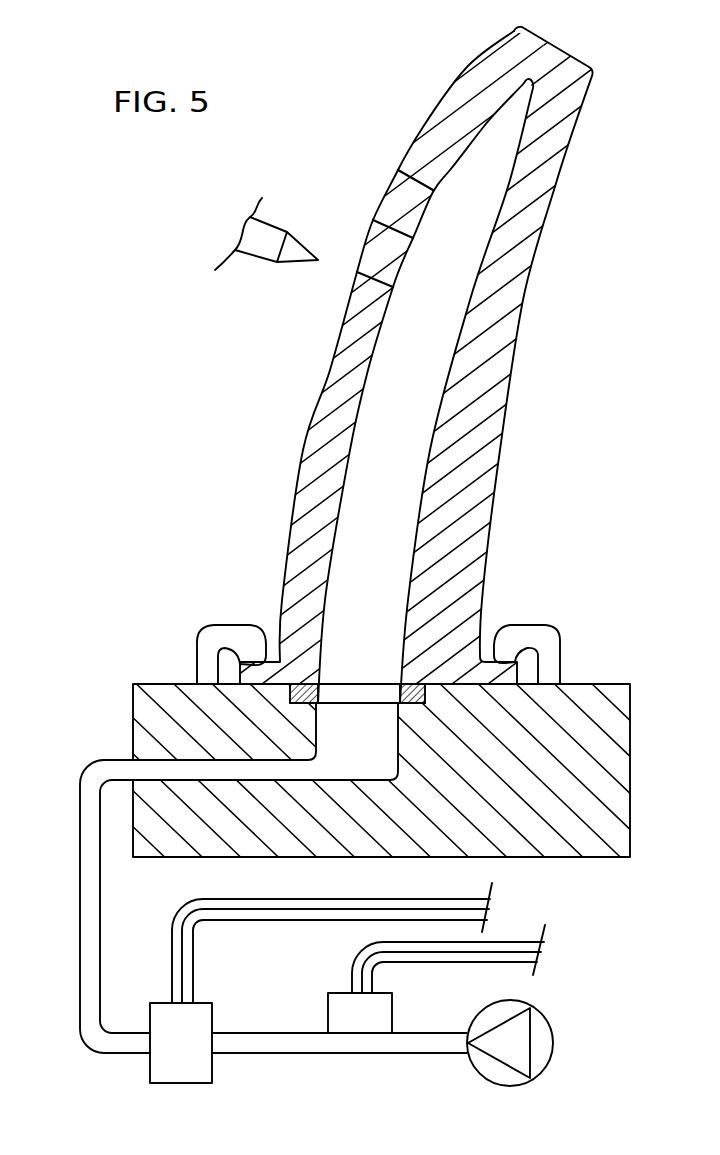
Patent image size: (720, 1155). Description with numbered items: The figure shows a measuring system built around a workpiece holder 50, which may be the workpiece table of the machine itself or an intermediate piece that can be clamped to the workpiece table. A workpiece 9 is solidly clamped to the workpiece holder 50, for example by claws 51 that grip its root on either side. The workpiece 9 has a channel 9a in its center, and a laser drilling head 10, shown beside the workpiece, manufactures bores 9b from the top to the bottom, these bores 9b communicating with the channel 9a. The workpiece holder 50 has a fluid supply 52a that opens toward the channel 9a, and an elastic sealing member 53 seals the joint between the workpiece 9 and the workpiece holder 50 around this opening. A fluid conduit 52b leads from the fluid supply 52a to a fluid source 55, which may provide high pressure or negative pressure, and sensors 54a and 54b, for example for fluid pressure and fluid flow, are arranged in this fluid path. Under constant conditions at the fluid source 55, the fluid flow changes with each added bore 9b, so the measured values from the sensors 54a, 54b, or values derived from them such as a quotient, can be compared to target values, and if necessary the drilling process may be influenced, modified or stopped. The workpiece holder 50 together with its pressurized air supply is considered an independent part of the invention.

The workpiece 9 is at (493, 397).
The channel 9a is at (437, 332).
The bores 9b is at (397, 170).
The laser drilling head 10 is at (257, 247).
The workpiece holder 50 is at (631, 712).
The claws 51 is at (210, 637).
The fluid supply 52a is at (350, 762).
The fluid conduit 52b is at (93, 887).
The elastic sealing member 53 is at (423, 697).
The sensor 54a is at (337, 1008).
The sensor 54b is at (155, 1072).
The fluid source 55 is at (518, 1030).